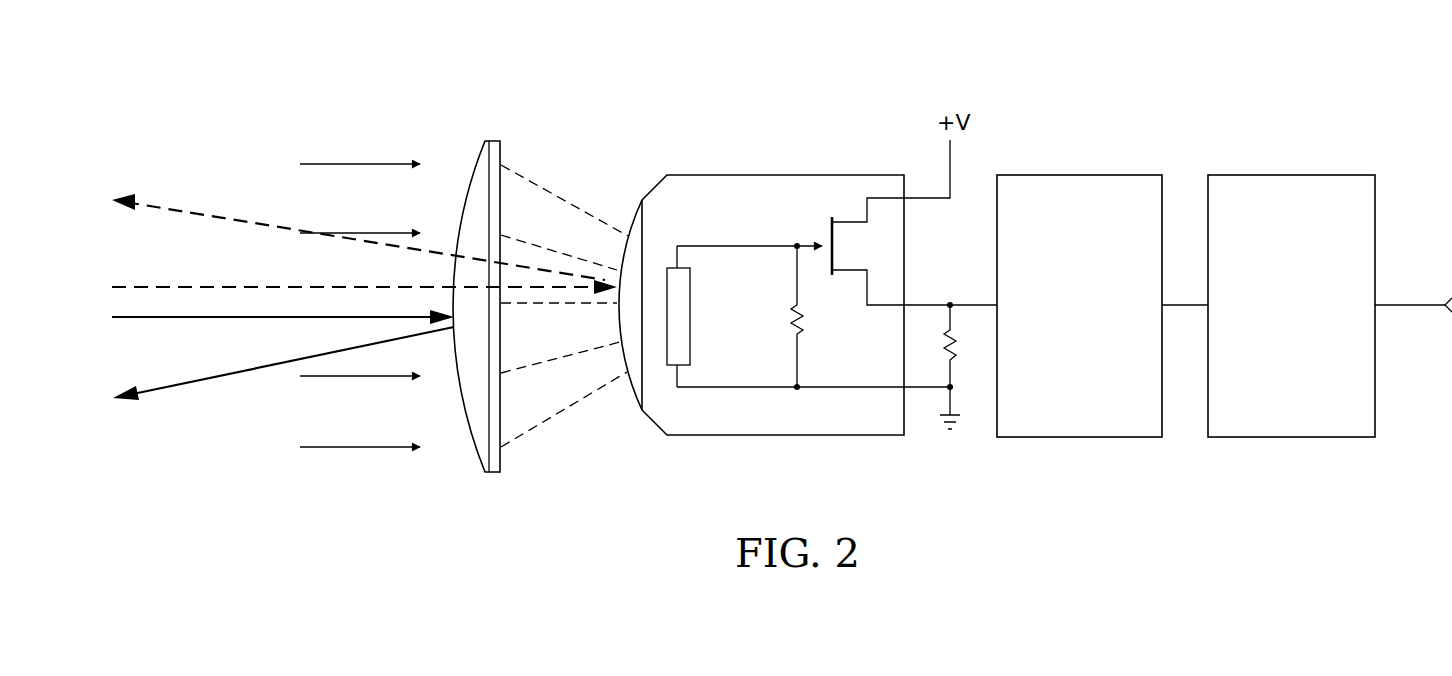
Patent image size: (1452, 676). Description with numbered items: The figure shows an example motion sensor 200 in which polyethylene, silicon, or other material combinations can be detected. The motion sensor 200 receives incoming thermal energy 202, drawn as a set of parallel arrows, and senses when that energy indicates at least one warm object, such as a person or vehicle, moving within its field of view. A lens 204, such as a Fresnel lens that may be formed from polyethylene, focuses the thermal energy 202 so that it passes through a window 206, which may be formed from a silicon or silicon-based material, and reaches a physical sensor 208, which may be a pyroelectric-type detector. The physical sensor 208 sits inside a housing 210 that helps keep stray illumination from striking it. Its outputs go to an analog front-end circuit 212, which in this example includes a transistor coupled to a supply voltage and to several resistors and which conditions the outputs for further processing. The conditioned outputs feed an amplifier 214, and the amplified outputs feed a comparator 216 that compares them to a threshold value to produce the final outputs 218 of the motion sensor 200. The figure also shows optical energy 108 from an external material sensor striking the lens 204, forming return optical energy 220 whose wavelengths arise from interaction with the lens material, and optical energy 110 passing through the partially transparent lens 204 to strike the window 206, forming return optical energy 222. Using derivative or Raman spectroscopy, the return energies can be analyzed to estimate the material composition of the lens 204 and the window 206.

The motion sensor 200 is at (1108, 100).
The thermal energy 202 is at (355, 146).
The lens 204 is at (484, 140).
The window 206 is at (624, 212).
The physical sensor 208 is at (692, 318).
The housing 210 is at (733, 170).
The analog front-end circuit 212 is at (838, 345).
The amplifier 214 is at (1103, 323).
The comparator 216 is at (1315, 323).
The final outputs 218 is at (1410, 303).
The optical energy 110 is at (197, 282).
The optical energy 108 is at (170, 321).
The return optical energy 220 is at (229, 376).
The return optical energy 222 is at (197, 208).